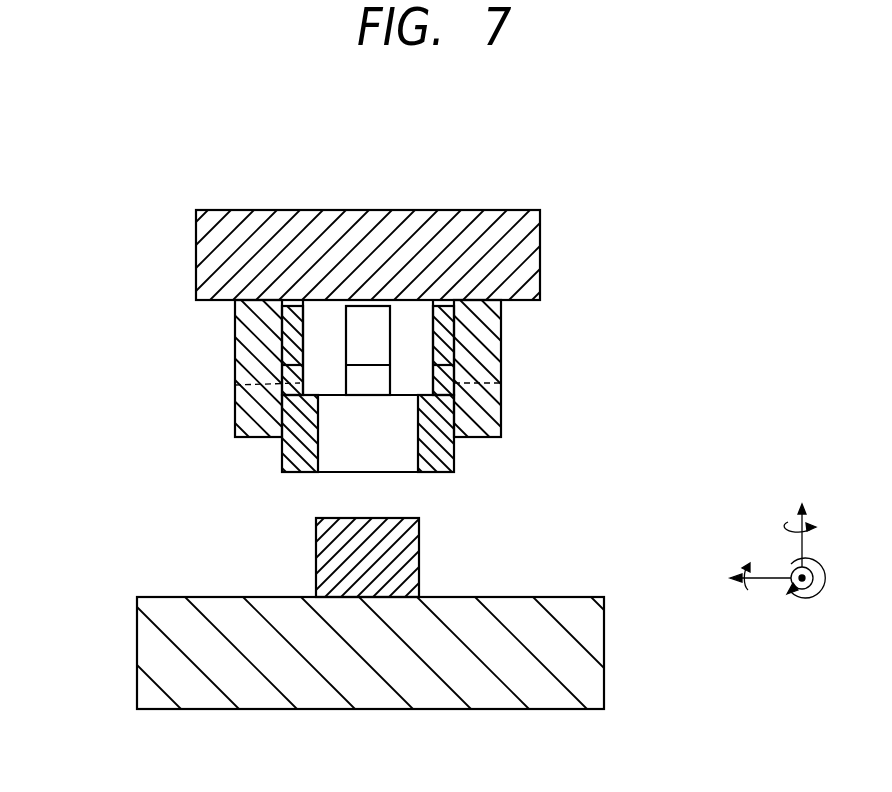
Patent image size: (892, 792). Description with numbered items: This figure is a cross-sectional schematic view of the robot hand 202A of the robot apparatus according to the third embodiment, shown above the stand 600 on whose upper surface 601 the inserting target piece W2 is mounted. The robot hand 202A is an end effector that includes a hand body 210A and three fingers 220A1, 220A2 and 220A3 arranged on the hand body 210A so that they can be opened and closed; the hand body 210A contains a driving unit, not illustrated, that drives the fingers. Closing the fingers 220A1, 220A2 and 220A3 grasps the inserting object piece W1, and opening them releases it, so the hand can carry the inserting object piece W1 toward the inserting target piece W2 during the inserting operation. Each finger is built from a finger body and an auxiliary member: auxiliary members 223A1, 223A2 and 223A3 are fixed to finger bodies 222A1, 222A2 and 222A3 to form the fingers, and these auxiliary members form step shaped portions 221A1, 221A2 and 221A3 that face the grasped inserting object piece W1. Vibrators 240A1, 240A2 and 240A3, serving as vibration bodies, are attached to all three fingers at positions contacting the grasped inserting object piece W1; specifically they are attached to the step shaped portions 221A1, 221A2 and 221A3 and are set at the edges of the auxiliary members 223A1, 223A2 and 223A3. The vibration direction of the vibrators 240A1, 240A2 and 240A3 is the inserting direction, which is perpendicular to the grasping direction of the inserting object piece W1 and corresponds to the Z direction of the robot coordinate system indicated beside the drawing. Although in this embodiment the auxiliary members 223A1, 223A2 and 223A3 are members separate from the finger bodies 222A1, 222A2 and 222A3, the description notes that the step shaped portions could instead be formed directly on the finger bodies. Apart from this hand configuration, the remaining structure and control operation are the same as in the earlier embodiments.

The robot hand 202A is at (195, 203).
The hand body 210A is at (205, 257).
The finger 220A1 is at (448, 148).
The step shaped portion 221A1 is at (372, 370).
The finger body 222A1 is at (400, 300).
The auxiliary member 223A1 is at (352, 330).
The finger 220A2 is at (637, 305).
The step shaped portion 221A2 is at (502, 383).
The finger body 222A2 is at (490, 347).
The auxiliary member 223A2 is at (452, 323).
The finger 220A3 is at (115, 307).
The step shaped portion 221A3 is at (235, 385).
The finger body 222A3 is at (250, 355).
The auxiliary member 223A3 is at (293, 328).
The vibrator 240A1 is at (370, 385).
The vibrator 240A2 is at (456, 392).
The vibrator 240A3 is at (283, 384).
The inserting object piece W1 is at (295, 470).
The inserting target piece W2 is at (326, 558).
The stand 600 is at (592, 677).
The upper surface 601 is at (587, 598).